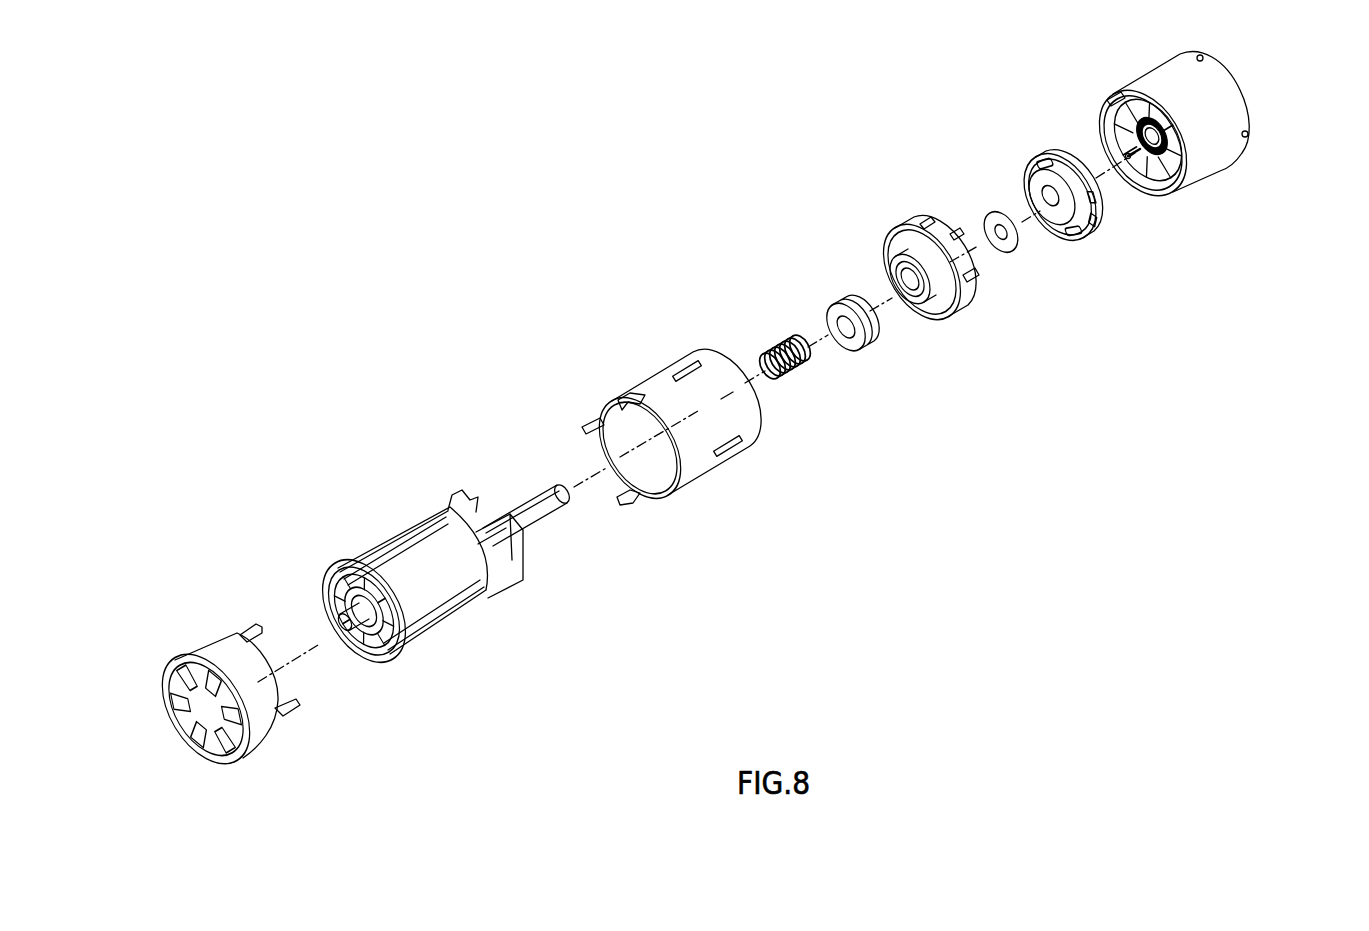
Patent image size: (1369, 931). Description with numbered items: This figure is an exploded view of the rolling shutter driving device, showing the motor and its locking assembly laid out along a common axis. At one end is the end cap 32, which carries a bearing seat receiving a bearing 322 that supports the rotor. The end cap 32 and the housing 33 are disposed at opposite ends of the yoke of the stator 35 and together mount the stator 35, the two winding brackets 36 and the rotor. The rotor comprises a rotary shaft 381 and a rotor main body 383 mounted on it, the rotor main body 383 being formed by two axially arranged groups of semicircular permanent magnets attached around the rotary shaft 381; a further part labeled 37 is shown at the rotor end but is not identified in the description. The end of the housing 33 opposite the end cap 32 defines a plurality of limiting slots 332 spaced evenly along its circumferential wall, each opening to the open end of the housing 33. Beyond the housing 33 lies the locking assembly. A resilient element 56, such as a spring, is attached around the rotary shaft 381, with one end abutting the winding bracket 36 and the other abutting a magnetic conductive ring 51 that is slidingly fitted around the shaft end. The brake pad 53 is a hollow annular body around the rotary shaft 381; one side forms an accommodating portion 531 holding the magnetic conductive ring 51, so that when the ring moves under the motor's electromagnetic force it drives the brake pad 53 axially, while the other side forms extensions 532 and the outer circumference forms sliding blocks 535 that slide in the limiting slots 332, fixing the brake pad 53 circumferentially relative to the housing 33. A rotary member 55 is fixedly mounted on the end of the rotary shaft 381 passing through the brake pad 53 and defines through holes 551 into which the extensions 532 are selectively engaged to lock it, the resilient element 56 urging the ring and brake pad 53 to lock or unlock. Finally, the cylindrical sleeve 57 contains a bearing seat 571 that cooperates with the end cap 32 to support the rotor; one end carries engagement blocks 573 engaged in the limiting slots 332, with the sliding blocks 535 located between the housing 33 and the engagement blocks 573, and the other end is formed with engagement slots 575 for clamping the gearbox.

The end cap 32 is at (258, 732).
The bearing 322 is at (1150, 157).
The housing 33 is at (657, 443).
The limiting slots 332 is at (733, 447).
The stator 35 is at (436, 656).
The winding bracket 36 is at (512, 575).
The commutator 37 is at (337, 572).
The rotary shaft 381 is at (550, 508).
The rotor main body 383 is at (343, 602).
The magnetic conductive ring 51 is at (838, 300).
The brake pad 53 is at (910, 276).
The accommodating portion 531 is at (912, 308).
The extensions 532 is at (950, 232).
The sliding blocks 535 is at (977, 297).
The rotary member 55 is at (1034, 217).
The through holes 551 is at (1040, 150).
The resilient element 56 is at (802, 368).
The sleeve 57 is at (1179, 159).
The bearing seat 571 is at (1117, 98).
The engagement blocks 573 is at (1190, 173).
The engagement slots 575 is at (1250, 137).